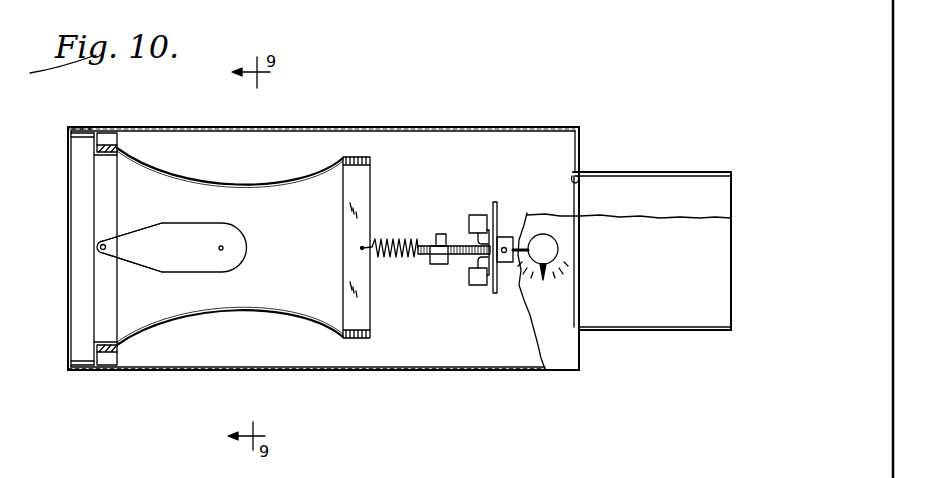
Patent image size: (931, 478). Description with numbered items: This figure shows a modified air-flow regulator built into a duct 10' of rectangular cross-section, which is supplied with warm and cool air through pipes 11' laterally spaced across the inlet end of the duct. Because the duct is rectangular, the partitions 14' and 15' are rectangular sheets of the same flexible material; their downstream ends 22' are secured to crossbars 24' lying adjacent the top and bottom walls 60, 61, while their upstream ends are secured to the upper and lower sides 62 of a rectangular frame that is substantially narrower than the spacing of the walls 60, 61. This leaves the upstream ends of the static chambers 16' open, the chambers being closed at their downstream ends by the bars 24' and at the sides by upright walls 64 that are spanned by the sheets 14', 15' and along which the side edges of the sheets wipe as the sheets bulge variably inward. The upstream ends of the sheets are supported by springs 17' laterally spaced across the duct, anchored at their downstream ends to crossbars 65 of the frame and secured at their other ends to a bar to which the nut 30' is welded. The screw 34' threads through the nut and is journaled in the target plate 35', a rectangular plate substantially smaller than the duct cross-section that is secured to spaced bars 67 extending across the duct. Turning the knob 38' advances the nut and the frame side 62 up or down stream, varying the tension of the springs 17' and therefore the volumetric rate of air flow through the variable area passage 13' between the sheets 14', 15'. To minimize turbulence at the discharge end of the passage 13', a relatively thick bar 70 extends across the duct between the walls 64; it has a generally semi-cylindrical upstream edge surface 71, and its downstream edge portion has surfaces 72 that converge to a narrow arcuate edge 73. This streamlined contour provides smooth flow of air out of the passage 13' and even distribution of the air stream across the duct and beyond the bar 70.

The duct 10' is at (378, 227).
The pipes 11' is at (629, 233).
The variable area passage 13' is at (309, 238).
The partition 14' is at (230, 166).
The partition 15' is at (230, 326).
The static chambers 16' is at (321, 249).
The springs 17' is at (391, 230).
The downstream ends 22' is at (119, 245).
The crossbars 24' is at (71, 249).
The nut 30' is at (441, 222).
The screw 34' is at (454, 278).
The target plate 35' is at (513, 233).
The knob 38' is at (543, 236).
The top wall 60 is at (423, 130).
The bottom wall 61 is at (392, 371).
The upper and lower sides of frame 62 is at (439, 264).
The upright walls 64 is at (558, 340).
The crossbars of frame 65 is at (360, 178).
The spaced bars 67 is at (480, 215).
The bar 70 is at (226, 236).
The semi-cylindrical upstream edge surface 71 is at (246, 262).
The converging surfaces 72 is at (147, 228).
The narrow arcuate edge 73 is at (100, 246).